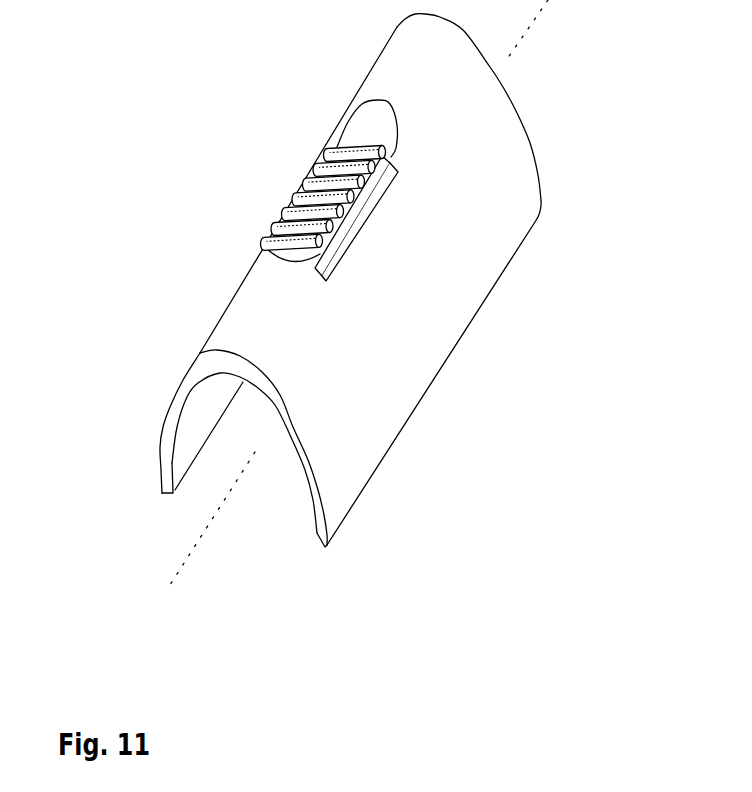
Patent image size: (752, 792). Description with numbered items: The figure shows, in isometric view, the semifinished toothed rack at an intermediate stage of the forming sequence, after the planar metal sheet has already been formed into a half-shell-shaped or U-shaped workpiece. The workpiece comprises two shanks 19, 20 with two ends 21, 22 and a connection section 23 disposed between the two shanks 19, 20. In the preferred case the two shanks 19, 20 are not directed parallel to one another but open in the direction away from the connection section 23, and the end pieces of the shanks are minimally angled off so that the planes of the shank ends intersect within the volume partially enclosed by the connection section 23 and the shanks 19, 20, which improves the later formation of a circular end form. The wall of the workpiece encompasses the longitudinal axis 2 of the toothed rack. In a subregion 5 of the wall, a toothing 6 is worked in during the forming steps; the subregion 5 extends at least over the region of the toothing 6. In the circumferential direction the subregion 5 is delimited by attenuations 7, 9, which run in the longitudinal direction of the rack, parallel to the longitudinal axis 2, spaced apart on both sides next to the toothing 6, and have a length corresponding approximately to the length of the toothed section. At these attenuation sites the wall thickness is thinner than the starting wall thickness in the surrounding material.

The longitudinal axis 2 is at (187, 562).
The subregion 5 is at (397, 145).
The toothing 6 is at (302, 200).
The attenuation 7 is at (312, 208).
The attenuation 9 is at (345, 257).
The shank 19 is at (388, 348).
The shank 20 is at (165, 425).
The end 21 is at (325, 543).
The end 22 is at (160, 495).
The connection section 23 is at (240, 332).